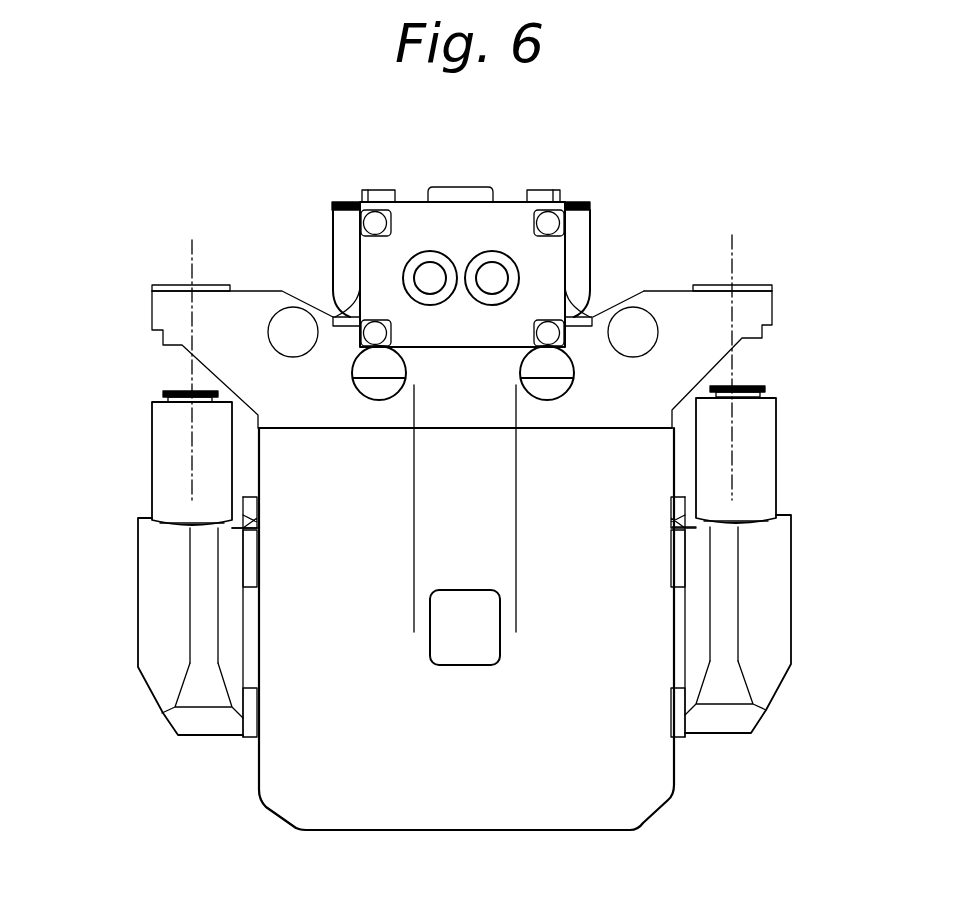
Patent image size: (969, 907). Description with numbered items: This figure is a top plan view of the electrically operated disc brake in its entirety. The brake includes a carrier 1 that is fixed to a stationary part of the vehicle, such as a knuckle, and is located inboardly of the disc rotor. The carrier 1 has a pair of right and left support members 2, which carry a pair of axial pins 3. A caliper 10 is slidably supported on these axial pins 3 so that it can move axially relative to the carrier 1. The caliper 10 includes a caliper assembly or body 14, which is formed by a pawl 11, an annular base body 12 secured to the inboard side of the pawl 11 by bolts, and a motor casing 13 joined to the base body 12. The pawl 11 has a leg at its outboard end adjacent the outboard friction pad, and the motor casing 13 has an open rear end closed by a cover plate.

The carrier 1 is at (145, 687).
The support member 2 is at (178, 455).
The axial pin 3 is at (180, 378).
The caliper 10 is at (540, 624).
The pawl 11 is at (288, 773).
The annular base body 12 is at (662, 307).
The motor casing 13 is at (345, 243).
The caliper body 14 is at (650, 618).